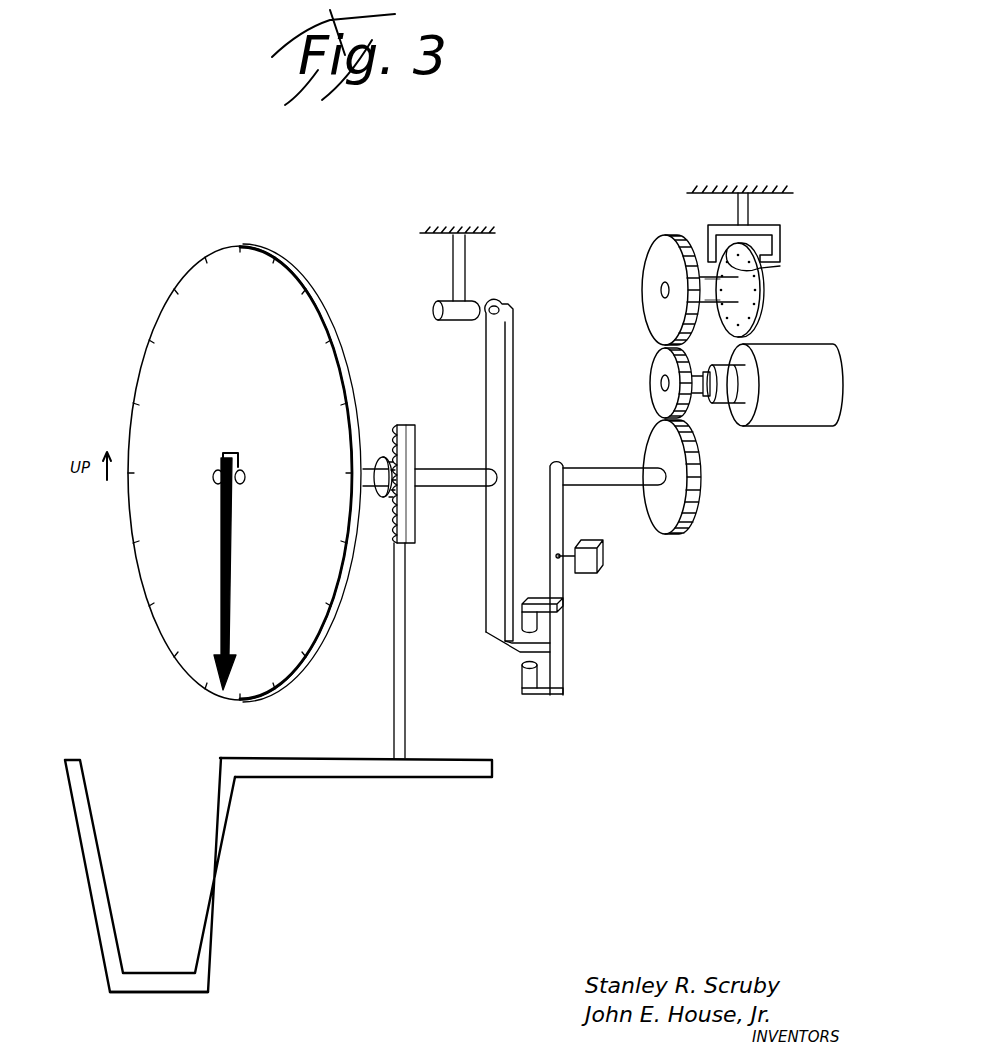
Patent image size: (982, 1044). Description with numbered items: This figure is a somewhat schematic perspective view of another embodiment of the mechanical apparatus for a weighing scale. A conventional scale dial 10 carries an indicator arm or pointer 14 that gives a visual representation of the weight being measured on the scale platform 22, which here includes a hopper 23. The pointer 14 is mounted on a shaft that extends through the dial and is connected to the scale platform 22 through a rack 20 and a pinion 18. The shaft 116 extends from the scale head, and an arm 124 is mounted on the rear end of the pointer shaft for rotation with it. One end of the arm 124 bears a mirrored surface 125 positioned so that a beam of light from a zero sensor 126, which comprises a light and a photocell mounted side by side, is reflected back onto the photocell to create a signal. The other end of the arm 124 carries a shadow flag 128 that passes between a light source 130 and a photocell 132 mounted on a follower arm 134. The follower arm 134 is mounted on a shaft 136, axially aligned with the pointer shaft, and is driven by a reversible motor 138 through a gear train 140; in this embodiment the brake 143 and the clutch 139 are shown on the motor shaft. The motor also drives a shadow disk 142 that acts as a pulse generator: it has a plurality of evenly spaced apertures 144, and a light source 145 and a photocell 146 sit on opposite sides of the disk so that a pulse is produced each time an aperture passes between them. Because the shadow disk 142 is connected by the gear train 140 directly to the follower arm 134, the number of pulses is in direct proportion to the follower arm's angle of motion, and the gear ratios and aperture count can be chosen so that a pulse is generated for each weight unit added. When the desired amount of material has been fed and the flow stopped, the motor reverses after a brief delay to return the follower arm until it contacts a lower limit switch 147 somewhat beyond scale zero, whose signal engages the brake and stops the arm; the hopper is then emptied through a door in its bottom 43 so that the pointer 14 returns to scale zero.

The scale dial 10 is at (155, 574).
The indicator arm or pointer 14 is at (225, 622).
The pinion 18 is at (384, 468).
The rack 20 is at (394, 543).
The scale platform 22 is at (340, 778).
The hopper 23 is at (218, 866).
The bottom 43 is at (140, 993).
The shaft 116 is at (443, 468).
The arm 124 is at (490, 357).
The mirrored surface 125 is at (499, 306).
The zero sensor 126 is at (433, 312).
The shadow flag 128 is at (547, 645).
The light source 130 is at (560, 692).
The photocell 132 is at (530, 625).
The follower arm 134 is at (567, 597).
The shaft 136 is at (616, 468).
The reversible motor 138 is at (800, 398).
The clutch 139 is at (733, 425).
The gear train 140 is at (700, 505).
The shadow disk 142 is at (757, 320).
The brake 143 is at (715, 405).
The apertures 144 is at (760, 286).
The light source 145 is at (782, 264).
The photocell 146 is at (718, 228).
The lower limit switch 147 is at (597, 573).